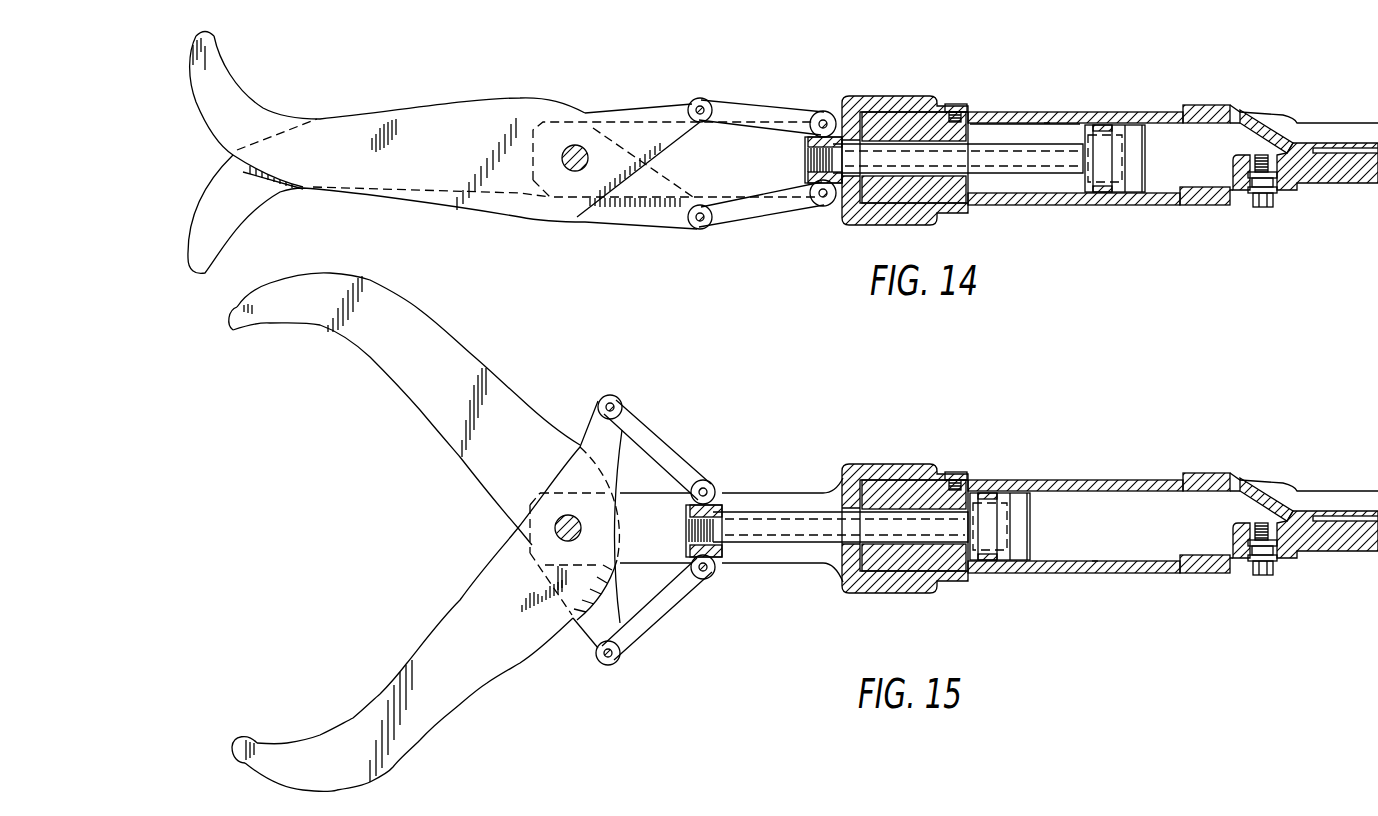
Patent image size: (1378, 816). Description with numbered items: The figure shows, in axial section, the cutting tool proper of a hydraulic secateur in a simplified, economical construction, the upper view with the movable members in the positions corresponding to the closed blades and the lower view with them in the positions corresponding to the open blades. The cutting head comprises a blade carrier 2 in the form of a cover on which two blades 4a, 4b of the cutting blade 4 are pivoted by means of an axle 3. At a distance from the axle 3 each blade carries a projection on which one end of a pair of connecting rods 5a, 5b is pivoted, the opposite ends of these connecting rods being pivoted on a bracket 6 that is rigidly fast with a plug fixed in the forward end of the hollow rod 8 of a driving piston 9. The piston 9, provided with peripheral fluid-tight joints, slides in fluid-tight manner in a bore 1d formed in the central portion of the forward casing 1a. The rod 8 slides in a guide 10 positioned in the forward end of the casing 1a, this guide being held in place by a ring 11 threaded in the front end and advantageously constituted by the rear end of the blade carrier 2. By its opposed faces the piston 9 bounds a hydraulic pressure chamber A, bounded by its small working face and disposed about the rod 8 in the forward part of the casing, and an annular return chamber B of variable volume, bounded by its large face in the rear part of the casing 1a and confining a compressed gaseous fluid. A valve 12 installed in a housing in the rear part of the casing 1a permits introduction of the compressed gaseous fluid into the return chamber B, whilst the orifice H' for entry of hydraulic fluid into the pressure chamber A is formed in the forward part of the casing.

In FIG. 14, the forward casing 1a is at (1043, 203).
In FIG. 15, the forward casing 1a is at (1075, 484).
In FIG. 14, the bore 1d is at (1047, 124).
In FIG. 15, the bore 1d is at (1073, 602).
In FIG. 14, the blade carrier 2 is at (660, 142).
In FIG. 15, the blade carrier 2 is at (785, 558).
In FIG. 14, the axle 3 is at (575, 145).
In FIG. 15, the axle 3 is at (555, 527).
In FIG. 14, the blade 4 is at (225, 93).
In FIG. 14, the blade 4a is at (242, 190).
In FIG. 15, the blade 4a is at (458, 388).
In FIG. 14, the blade 4b is at (444, 188).
In FIG. 15, the blade 4b is at (495, 662).
In FIG. 14, the connecting rod 5a is at (748, 208).
In FIG. 15, the connecting rod 5a is at (645, 620).
In FIG. 14, the connecting rod 5b is at (760, 108).
In FIG. 15, the connecting rod 5b is at (637, 430).
In FIG. 14, the bracket 6 is at (837, 125).
In FIG. 15, the bracket 6 is at (715, 573).
In FIG. 14, the rod 8 is at (1030, 157).
In FIG. 15, the rod 8 is at (830, 528).
In FIG. 14, the driving piston 9 is at (1122, 140).
In FIG. 15, the driving piston 9 is at (1002, 478).
In FIG. 14, the guide 10 is at (890, 128).
In FIG. 15, the guide 10 is at (914, 561).
In FIG. 14, the ring 11 is at (855, 108).
In FIG. 15, the ring 11 is at (905, 553).
In FIG. 14, the valve 12 is at (1263, 183).
In FIG. 15, the valve 12 is at (1256, 584).
In FIG. 14, the hydraulic pressure chamber A is at (990, 128).
In FIG. 14, the return chamber B is at (1165, 135).
In FIG. 15, the return chamber B is at (1187, 484).
In FIG. 14, the orifice H' is at (965, 86).
In FIG. 15, the orifice H' is at (963, 443).